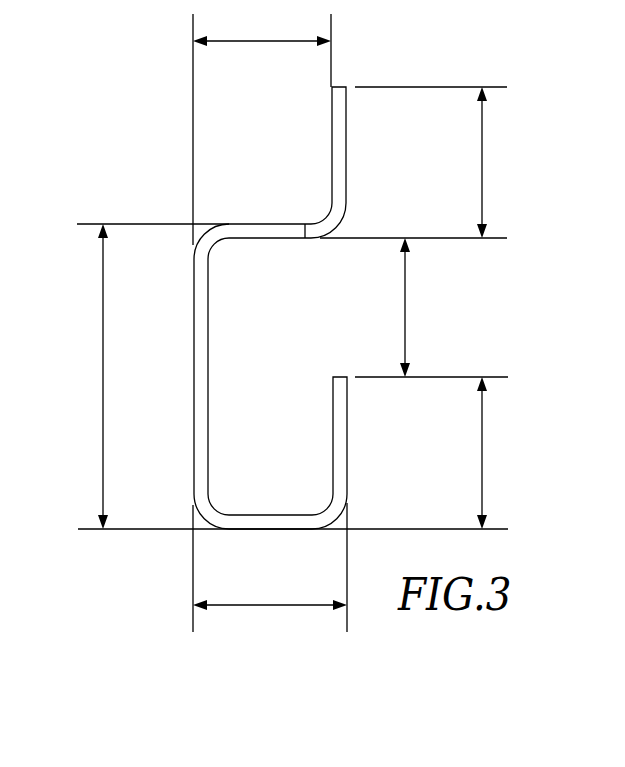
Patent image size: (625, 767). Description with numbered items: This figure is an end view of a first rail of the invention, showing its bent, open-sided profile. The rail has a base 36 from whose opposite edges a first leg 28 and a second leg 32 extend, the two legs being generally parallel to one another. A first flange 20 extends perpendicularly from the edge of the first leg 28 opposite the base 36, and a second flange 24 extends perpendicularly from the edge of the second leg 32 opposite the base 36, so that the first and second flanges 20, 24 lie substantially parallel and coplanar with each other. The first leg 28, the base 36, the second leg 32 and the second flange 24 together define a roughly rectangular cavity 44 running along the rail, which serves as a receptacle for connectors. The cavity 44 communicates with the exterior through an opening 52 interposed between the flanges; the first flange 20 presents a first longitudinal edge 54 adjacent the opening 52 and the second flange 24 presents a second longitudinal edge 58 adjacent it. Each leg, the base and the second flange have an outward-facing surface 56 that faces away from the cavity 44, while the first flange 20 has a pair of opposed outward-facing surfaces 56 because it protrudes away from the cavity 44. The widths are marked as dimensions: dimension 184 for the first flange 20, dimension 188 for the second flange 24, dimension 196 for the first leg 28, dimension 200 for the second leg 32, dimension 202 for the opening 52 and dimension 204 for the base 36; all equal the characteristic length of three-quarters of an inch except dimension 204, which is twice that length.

The first flange 20 is at (347, 113).
The second flange 24 is at (348, 415).
The first leg 28 is at (248, 239).
The second leg 32 is at (283, 531).
The base 36 is at (193, 350).
The cavity 44 is at (280, 458).
The opening 52 is at (335, 318).
The first longitudinal edge 54 is at (333, 232).
The outward-facing surface 56 is at (347, 148).
The second longitudinal edge 58 is at (337, 376).
The dimension 184 is at (482, 163).
The dimension 188 is at (482, 458).
The dimension 196 is at (250, 41).
The dimension 200 is at (270, 605).
The dimension 202 is at (406, 310).
The dimension 204 is at (102, 352).